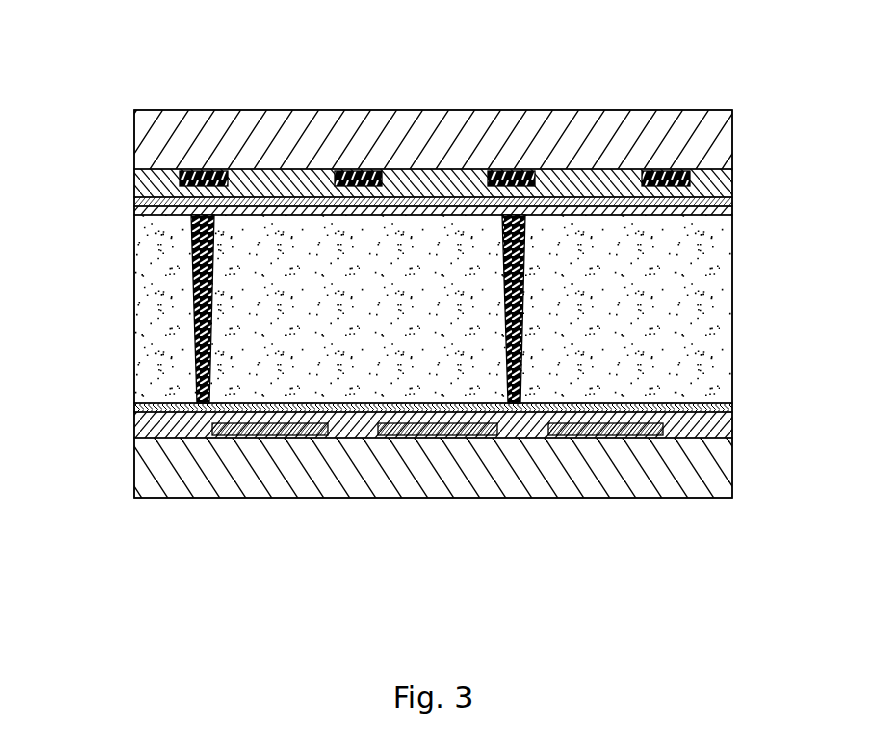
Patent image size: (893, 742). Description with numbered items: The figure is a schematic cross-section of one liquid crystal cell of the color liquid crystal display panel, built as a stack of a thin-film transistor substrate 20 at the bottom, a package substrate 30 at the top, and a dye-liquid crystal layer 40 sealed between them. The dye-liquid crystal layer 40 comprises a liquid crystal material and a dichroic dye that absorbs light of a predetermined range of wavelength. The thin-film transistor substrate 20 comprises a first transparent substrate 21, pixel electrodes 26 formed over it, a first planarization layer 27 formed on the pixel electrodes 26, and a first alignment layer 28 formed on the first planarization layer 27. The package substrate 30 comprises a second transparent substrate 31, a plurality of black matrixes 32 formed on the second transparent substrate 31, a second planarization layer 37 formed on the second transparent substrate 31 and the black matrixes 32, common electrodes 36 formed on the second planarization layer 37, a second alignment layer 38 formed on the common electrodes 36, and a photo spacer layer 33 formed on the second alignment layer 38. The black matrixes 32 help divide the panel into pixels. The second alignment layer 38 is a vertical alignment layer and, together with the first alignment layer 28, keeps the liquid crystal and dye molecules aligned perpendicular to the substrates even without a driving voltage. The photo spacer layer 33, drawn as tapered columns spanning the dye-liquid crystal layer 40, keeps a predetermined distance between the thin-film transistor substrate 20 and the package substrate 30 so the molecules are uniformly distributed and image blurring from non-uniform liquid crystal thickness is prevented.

The thin-film transistor substrate 20 is at (433, 504).
The first transparent substrate 21 is at (410, 561).
The pixel electrodes 26 is at (244, 440).
The first planarization layer 27 is at (342, 440).
The first alignment layer 28 is at (362, 405).
The package substrate 30 is at (404, 109).
The second transparent substrate 31 is at (191, 138).
The black matrixes 32 is at (352, 183).
The photo spacer layer 33 is at (192, 233).
The common electrodes 36 is at (412, 203).
The second planarization layer 37 is at (282, 187).
The second alignment layer 38 is at (433, 134).
The dye-liquid crystal layer 40 is at (165, 314).